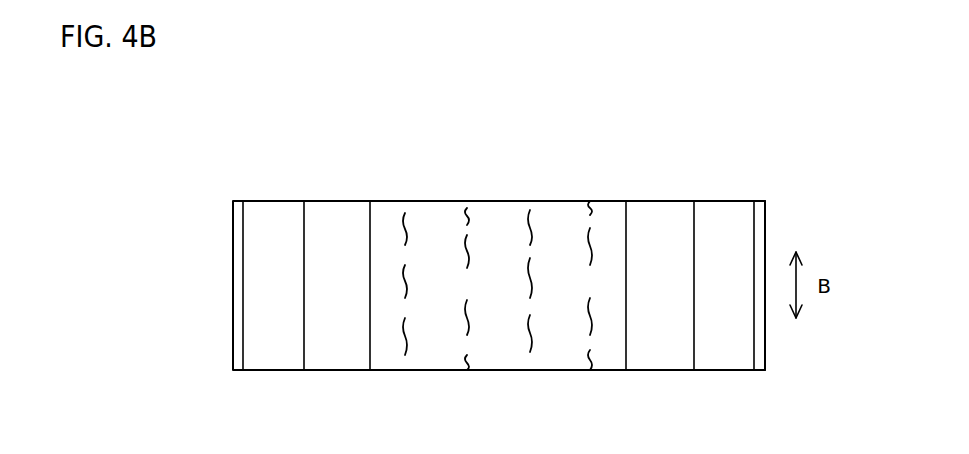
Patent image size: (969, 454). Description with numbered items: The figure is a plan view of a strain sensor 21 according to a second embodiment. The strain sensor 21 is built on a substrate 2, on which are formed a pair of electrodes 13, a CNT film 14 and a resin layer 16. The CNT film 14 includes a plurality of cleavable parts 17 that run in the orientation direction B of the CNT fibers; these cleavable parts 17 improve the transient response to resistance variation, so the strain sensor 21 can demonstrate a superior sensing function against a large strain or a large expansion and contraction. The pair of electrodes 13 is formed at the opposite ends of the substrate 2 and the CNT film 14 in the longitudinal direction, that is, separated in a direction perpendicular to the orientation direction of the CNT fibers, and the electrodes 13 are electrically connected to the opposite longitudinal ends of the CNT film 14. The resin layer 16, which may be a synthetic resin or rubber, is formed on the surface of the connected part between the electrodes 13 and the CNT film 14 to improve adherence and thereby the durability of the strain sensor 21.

The strain sensor 21 is at (752, 155).
The cleavable parts 17 is at (467, 209).
The CNT film 14 is at (618, 362).
The resin layer 16 is at (673, 362).
The electrodes 13 is at (737, 362).
The substrate 2 is at (760, 362).